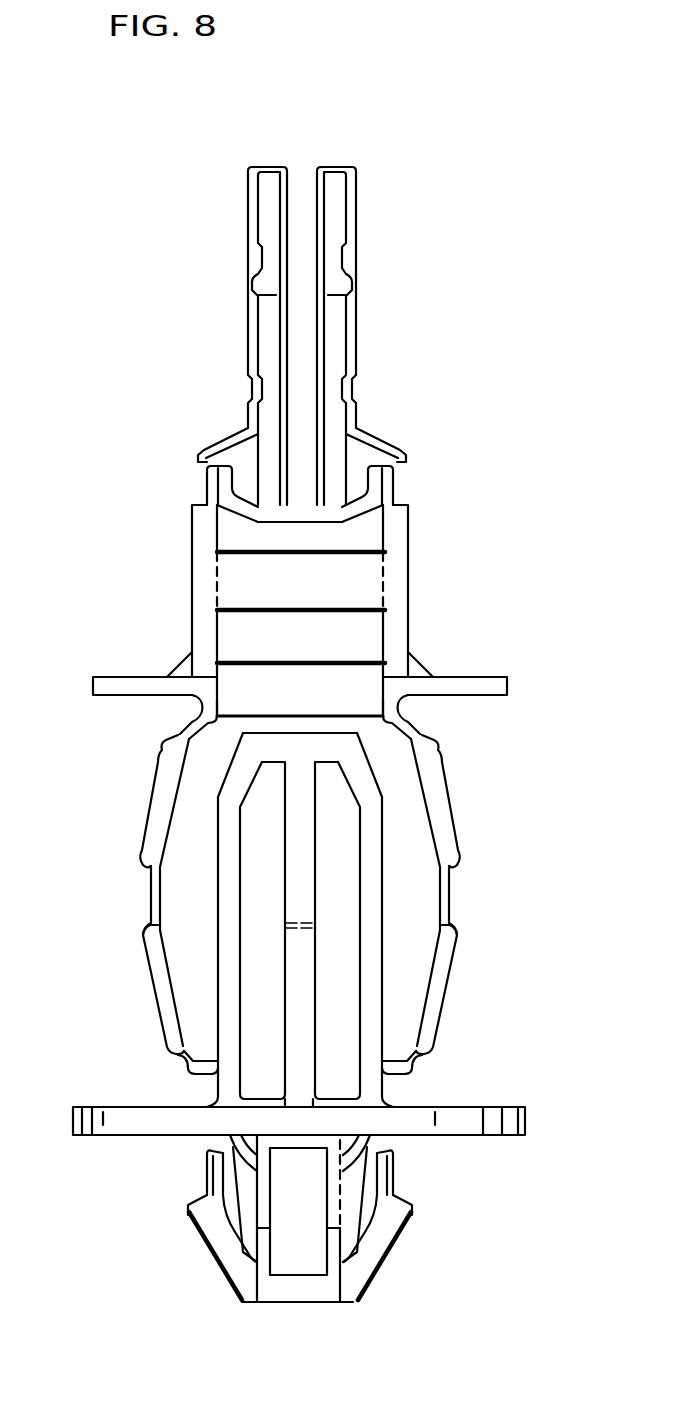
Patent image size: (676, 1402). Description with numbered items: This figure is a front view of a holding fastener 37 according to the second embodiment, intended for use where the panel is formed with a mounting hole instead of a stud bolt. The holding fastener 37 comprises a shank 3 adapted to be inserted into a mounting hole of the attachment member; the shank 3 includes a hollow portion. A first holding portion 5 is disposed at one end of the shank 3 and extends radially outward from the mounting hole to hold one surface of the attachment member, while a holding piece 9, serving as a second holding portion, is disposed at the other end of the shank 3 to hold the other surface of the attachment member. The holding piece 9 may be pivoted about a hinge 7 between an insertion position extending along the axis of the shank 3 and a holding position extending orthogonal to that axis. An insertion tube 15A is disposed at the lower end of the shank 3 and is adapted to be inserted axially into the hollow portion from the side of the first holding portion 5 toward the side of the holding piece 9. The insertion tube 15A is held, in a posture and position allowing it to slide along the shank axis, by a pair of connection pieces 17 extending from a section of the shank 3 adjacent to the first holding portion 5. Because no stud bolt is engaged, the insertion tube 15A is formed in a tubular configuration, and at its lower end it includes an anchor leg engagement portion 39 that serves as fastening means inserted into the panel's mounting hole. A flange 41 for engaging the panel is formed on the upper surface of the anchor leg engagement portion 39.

The shank 3 is at (200, 572).
The first holding portion 5 is at (122, 683).
The hinge 7 is at (208, 485).
The holding piece 9 is at (252, 237).
The insertion tube 15A is at (227, 883).
The connection pieces 17 is at (167, 993).
The holding fastener 37 is at (442, 379).
The anchor leg engagement portion 39 is at (367, 1257).
The flange 41 is at (463, 1135).